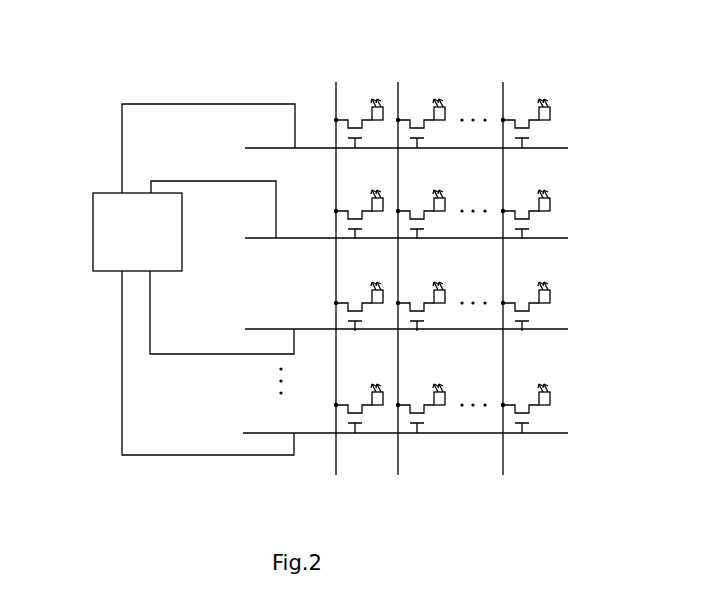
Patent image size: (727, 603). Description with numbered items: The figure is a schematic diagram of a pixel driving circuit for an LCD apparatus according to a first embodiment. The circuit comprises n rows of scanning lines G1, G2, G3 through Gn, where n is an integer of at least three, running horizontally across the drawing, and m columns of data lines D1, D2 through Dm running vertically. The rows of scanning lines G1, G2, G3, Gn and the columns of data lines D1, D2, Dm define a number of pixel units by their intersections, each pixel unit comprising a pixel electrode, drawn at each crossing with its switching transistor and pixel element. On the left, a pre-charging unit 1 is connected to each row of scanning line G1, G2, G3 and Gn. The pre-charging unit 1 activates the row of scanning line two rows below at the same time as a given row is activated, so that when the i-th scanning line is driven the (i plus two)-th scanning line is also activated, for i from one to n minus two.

The pre-charging unit 1 is at (93, 232).
The scanning line G1 is at (345, 148).
The scanning line G2 is at (359, 215).
The scanning line G3 is at (359, 312).
The scanning line Gn is at (345, 363).
The data line D1 is at (336, 265).
The data line D2 is at (398, 265).
The data line Dm is at (504, 265).